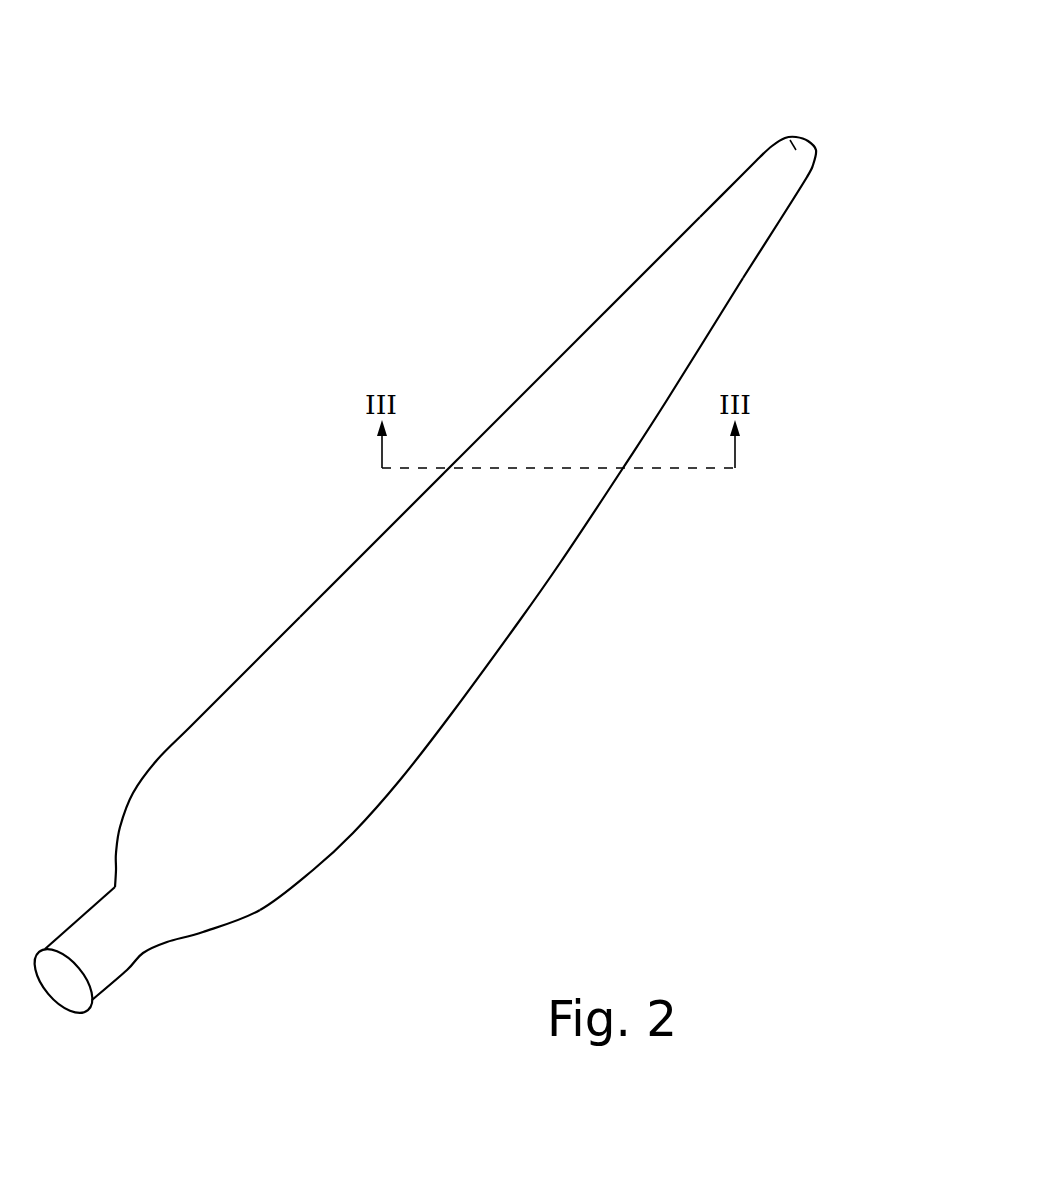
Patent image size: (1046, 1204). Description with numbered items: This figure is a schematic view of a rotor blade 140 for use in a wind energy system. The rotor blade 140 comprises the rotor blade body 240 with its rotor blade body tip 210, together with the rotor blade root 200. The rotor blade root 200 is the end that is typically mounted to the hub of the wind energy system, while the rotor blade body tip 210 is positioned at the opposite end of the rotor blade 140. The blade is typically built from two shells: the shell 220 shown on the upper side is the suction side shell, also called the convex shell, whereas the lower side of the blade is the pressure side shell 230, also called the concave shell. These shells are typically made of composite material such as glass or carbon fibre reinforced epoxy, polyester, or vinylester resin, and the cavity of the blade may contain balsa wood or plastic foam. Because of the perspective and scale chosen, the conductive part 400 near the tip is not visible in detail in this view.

The rotor blade 140 is at (257, 222).
The rotor blade root 200 is at (108, 962).
The rotor blade body tip 210 is at (795, 145).
The suction side shell 220 is at (242, 718).
The pressure side shell 230 is at (452, 713).
The rotor blade body 240 is at (583, 370).
The conductive part 400 is at (797, 140).